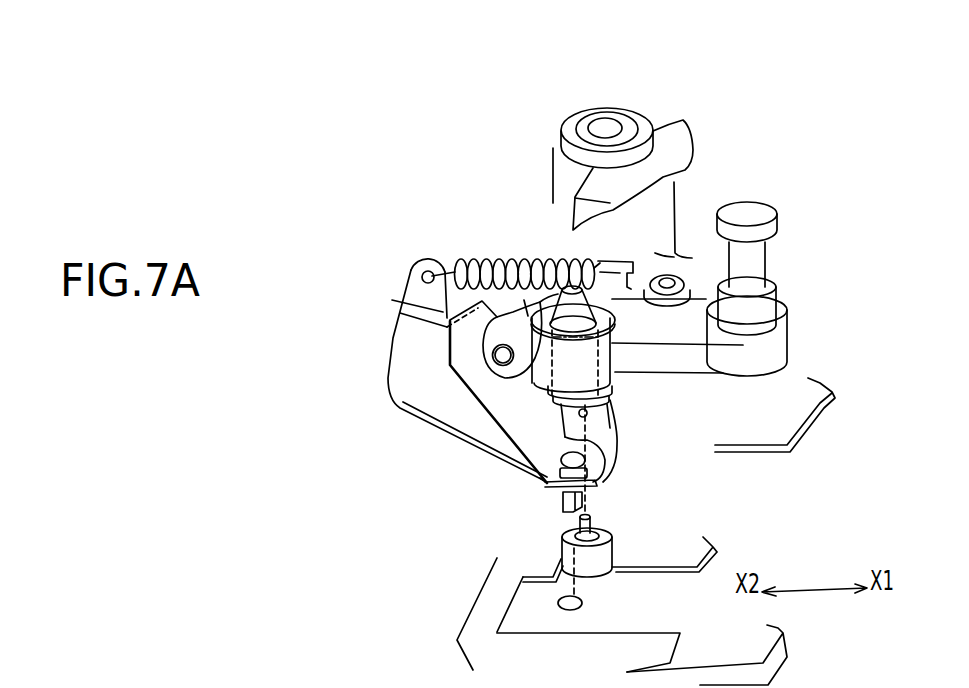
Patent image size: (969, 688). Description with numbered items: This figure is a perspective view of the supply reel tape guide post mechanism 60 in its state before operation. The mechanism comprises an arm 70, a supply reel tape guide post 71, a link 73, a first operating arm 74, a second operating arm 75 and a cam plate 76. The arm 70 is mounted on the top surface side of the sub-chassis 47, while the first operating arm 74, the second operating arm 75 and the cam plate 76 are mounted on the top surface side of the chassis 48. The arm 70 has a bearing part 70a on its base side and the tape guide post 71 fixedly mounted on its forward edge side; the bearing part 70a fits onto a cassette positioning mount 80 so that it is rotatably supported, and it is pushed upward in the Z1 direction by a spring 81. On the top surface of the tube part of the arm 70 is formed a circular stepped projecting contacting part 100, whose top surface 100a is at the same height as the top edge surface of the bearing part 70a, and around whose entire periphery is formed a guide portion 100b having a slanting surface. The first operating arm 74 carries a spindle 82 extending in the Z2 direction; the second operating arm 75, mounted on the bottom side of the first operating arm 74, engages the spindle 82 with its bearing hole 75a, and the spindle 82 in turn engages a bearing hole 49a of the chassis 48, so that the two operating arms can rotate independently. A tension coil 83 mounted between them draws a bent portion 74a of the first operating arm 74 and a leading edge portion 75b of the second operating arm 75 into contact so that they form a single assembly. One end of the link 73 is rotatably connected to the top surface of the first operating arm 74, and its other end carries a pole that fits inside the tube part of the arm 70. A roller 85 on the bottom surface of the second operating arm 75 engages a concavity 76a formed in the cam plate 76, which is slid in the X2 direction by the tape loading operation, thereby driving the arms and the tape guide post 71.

The supply reel tape guide post mechanism 60 is at (780, 57).
The circular stepped projecting contacting part 100 is at (646, 99).
The top surface 100a is at (593, 110).
The guide portion 100b is at (562, 145).
The supply reel tape guide post 71 is at (760, 255).
The arm 70 is at (677, 362).
The bearing part 70a is at (590, 318).
The spring 81 is at (602, 446).
The spindle 82 is at (563, 497).
The link 73 is at (524, 300).
The tension coil 83 is at (487, 258).
The cassette positioning mount 80 is at (603, 260).
The second operating arm 75 is at (397, 383).
The bent portion 74a is at (392, 300).
The leading edge portion 75b is at (395, 338).
The bearing hole 75a is at (540, 481).
The first operating arm 74 is at (497, 398).
The concavity 76a is at (612, 538).
The roller 85 is at (590, 560).
The bearing hole 49a is at (578, 607).
The cam plate 76 is at (707, 545).
The sub-chassis 47 is at (788, 423).
The chassis 48 is at (777, 670).